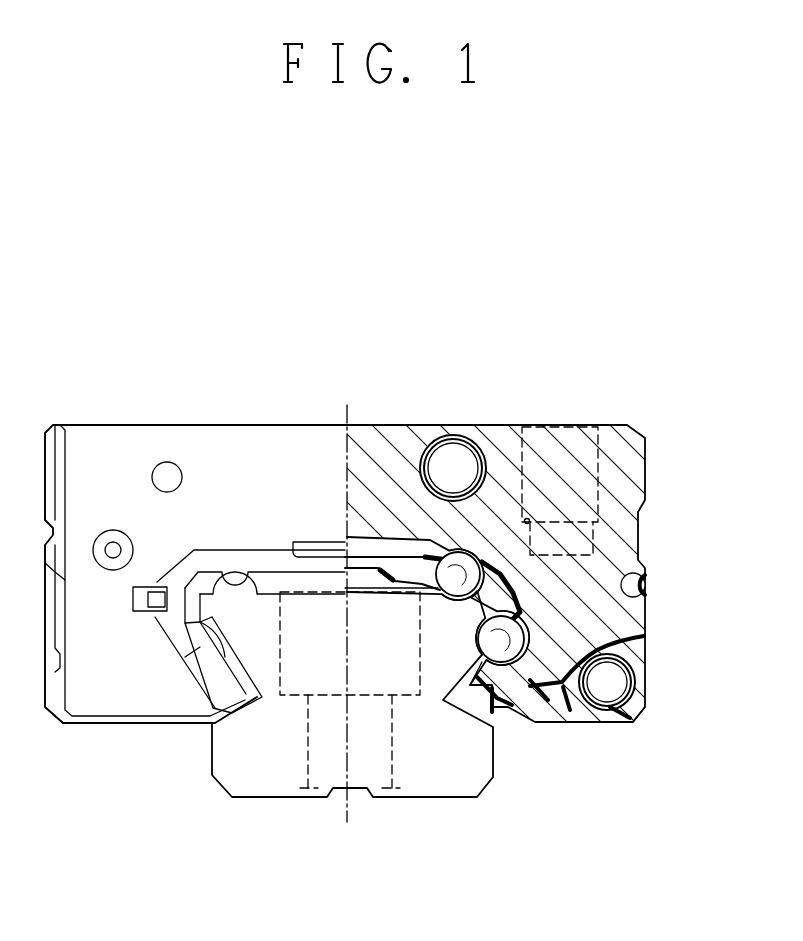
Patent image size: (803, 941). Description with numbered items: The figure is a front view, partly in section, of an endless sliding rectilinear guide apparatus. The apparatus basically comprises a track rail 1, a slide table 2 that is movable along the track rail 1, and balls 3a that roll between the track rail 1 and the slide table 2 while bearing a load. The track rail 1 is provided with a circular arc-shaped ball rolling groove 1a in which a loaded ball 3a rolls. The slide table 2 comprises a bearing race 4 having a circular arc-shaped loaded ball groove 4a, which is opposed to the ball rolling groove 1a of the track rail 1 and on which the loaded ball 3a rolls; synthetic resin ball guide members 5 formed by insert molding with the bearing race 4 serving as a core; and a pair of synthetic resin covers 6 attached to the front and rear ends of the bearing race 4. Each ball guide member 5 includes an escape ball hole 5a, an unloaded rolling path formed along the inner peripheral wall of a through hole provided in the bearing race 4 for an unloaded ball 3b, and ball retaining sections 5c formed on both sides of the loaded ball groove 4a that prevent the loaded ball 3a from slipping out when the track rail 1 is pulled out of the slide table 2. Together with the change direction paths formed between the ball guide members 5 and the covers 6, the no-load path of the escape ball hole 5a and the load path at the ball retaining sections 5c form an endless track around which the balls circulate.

The track rail 1 is at (224, 802).
The ball rolling groove 1a is at (468, 604).
The slide table 2 is at (150, 415).
The loaded ball 3a is at (425, 540).
The unloaded ball 3b is at (445, 440).
The bearing race 4 is at (638, 424).
The loaded ball groove 4a is at (480, 554).
The ball guide member 5 is at (523, 712).
The escape ball hole 5a is at (474, 440).
The ball retaining section 5c is at (528, 519).
The cover 6 is at (88, 445).